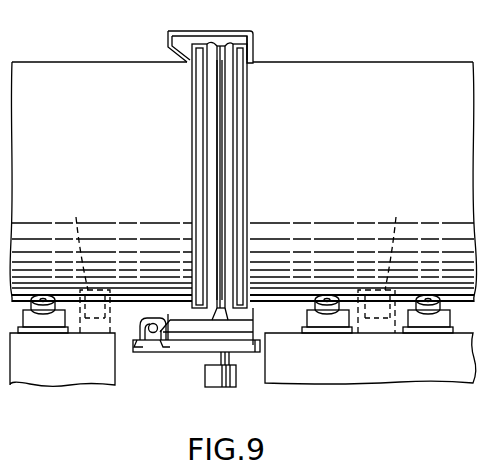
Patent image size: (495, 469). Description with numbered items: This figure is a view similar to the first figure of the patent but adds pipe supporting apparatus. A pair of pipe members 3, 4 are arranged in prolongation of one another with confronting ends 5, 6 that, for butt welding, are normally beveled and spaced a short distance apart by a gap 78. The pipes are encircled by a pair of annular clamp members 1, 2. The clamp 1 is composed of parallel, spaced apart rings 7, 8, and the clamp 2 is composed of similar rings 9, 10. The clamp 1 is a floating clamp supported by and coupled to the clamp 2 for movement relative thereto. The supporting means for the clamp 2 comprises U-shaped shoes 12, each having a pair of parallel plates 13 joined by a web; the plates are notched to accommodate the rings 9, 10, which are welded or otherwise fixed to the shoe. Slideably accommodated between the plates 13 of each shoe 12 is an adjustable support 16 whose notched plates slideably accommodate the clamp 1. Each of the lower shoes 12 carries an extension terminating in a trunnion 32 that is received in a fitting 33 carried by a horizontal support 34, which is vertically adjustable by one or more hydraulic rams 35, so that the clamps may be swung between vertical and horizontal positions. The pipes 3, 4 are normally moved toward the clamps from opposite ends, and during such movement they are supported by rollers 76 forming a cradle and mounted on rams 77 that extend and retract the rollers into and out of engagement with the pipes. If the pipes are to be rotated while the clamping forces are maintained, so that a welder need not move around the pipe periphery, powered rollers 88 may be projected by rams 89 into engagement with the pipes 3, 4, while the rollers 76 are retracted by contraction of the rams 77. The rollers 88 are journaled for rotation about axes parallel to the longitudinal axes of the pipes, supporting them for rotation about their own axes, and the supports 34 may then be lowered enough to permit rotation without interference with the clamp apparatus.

The clamp 1 is at (206, 220).
The clamp 2 is at (169, 176).
The pipe member 3 is at (367, 134).
The pipe member 4 is at (88, 142).
The confronting end 5 is at (212, 183).
The confronting end 6 is at (216, 94).
The ring 7 is at (260, 176).
The ring 8 is at (238, 160).
The ring 9 is at (178, 176).
The ring 10 is at (192, 141).
The U-shaped shoe 12 is at (176, 202).
The plate 13 is at (176, 31).
The adjustable support 16 is at (256, 46).
The trunnion 32 is at (155, 336).
The fitting 33 is at (143, 343).
The horizontal support 34 is at (245, 353).
The hydraulic ram 35 is at (210, 390).
The roller 76 is at (45, 312).
The ram 77 is at (28, 335).
The gap 78 is at (220, 166).
The powered roller 88 is at (233, 243).
The ram 89 is at (100, 334).